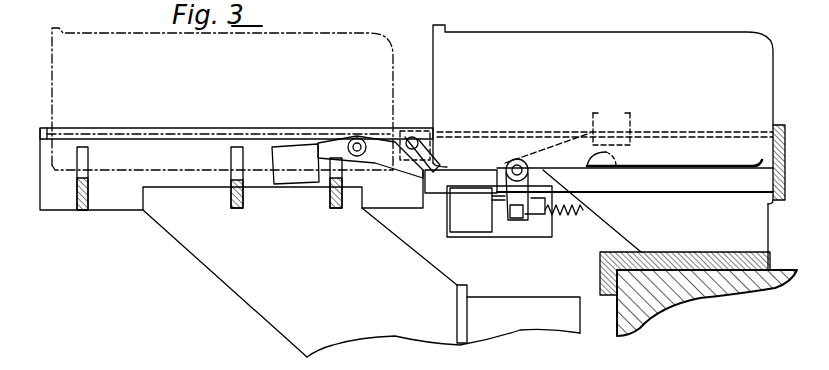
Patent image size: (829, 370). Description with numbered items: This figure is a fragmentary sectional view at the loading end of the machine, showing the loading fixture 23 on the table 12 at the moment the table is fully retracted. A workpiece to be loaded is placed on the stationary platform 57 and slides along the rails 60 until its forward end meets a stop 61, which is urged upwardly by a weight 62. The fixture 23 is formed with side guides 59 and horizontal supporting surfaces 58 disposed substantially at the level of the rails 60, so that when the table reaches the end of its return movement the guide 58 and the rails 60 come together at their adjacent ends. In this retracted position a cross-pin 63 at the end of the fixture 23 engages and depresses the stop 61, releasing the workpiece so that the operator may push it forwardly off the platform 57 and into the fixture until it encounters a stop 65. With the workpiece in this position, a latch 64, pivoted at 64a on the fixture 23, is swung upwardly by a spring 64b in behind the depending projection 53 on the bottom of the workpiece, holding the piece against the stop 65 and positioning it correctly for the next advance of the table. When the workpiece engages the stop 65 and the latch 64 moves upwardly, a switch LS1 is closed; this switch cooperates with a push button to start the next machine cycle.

The table 12 is at (717, 288).
The fixture 23 is at (752, 228).
The depending projection 53 is at (592, 114).
The stationary platform 57 is at (200, 238).
The horizontal supporting surfaces 58 is at (490, 131).
The side guides 59 is at (423, 130).
The rails 60 is at (43, 128).
The stop 61 is at (382, 143).
The weight 62 is at (292, 183).
The cross-pin 63 is at (408, 137).
The latch 64 is at (608, 160).
The pivot 64a is at (516, 160).
The spring 64b is at (575, 214).
The stop 65 is at (774, 125).
The switch LS1 is at (480, 226).